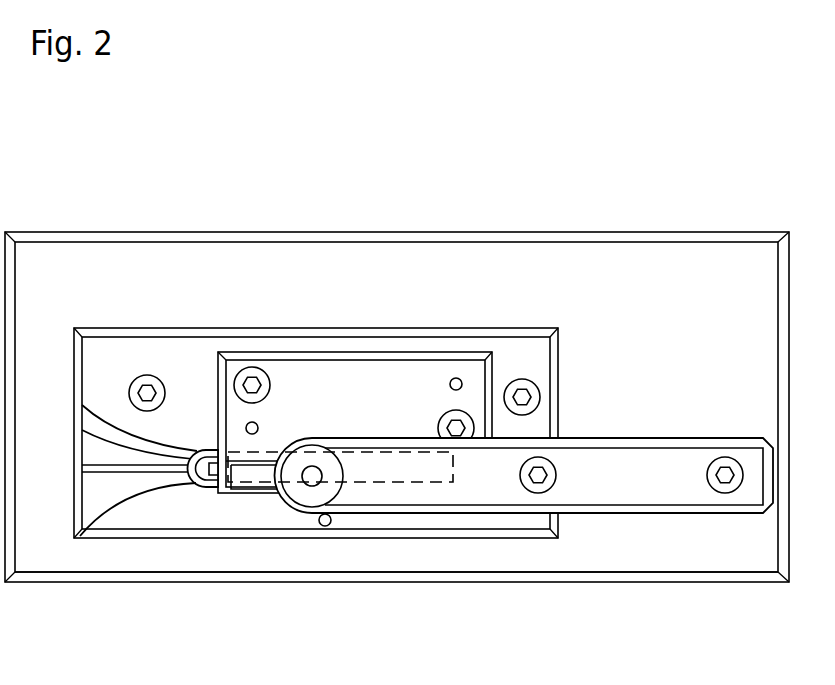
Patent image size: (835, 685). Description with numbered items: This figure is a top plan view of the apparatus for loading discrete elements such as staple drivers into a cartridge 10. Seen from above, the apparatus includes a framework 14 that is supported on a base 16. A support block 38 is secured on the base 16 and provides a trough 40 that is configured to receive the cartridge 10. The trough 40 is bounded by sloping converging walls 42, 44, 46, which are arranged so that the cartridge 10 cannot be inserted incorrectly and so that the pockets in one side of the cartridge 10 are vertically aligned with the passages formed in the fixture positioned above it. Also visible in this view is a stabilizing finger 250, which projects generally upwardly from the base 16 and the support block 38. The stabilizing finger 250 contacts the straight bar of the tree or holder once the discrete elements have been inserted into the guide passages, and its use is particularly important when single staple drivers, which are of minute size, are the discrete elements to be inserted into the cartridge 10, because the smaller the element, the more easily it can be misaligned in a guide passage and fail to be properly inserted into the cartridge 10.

The cartridge 10 is at (78, 431).
The framework 14 is at (617, 231).
The base 16 is at (618, 582).
The support block 38 is at (241, 328).
The trough 40 is at (399, 483).
The sloping converging wall 42 is at (75, 497).
The sloping converging wall 44 is at (136, 494).
The sloping converging wall 46 is at (92, 420).
The stabilizing finger 250 is at (318, 515).